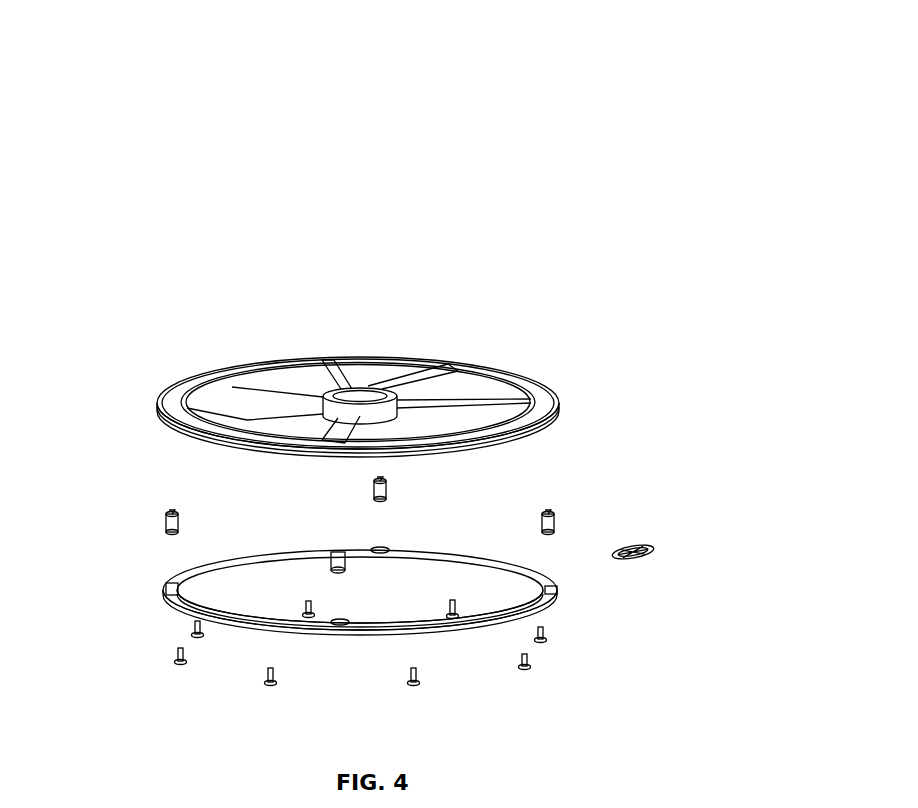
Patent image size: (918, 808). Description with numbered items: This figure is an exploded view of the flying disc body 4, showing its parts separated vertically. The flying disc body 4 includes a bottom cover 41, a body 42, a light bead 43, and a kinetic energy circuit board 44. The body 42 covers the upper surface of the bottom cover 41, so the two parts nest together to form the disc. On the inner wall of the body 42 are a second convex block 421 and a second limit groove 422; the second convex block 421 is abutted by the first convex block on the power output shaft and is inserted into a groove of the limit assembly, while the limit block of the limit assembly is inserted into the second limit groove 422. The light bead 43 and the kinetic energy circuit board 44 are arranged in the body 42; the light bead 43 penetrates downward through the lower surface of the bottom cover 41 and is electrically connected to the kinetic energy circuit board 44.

The flying disc body 4 is at (541, 118).
The bottom cover 41 is at (172, 598).
The body 42 is at (557, 396).
The second convex block 421 is at (437, 362).
The second limit groove 422 is at (320, 378).
The light bead 43 is at (556, 522).
The kinetic energy circuit board 44 is at (646, 550).